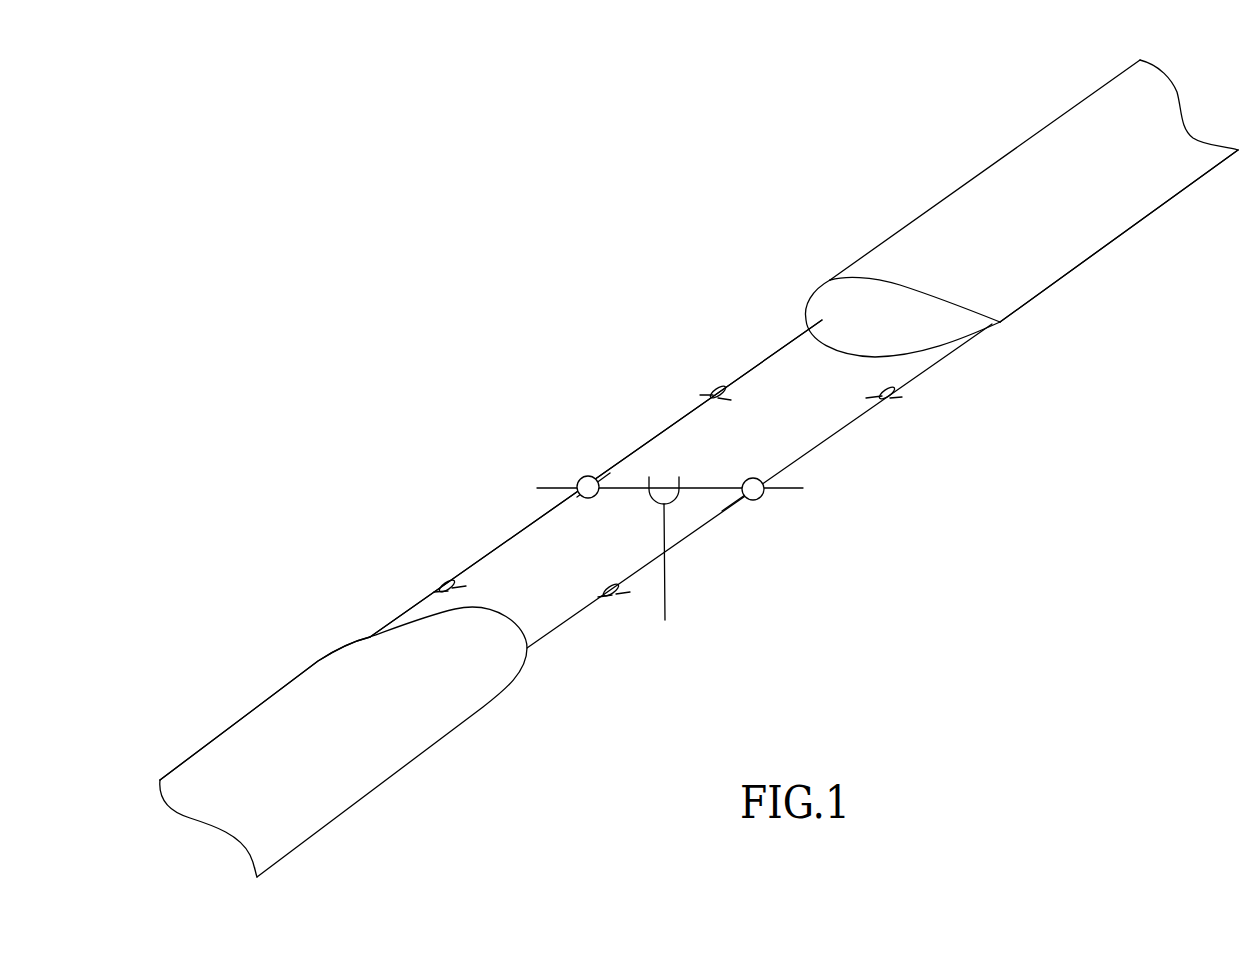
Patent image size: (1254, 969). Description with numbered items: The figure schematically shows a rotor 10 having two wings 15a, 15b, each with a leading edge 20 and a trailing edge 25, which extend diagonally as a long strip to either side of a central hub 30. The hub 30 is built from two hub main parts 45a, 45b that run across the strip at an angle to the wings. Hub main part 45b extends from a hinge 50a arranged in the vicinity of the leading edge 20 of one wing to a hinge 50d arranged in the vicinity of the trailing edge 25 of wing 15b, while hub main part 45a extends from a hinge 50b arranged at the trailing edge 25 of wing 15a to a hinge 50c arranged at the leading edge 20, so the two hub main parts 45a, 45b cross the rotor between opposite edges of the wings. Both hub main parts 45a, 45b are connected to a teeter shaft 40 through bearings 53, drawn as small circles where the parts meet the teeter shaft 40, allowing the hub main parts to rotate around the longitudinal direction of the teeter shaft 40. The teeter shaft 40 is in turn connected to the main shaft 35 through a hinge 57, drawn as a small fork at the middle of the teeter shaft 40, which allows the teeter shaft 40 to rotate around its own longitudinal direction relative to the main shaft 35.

The rotor 10 is at (592, 335).
The wing 15a is at (1008, 187).
The wing 15b is at (370, 752).
The leading edge 20 is at (905, 227).
The trailing edge 25 is at (1057, 283).
The hub 30 is at (722, 508).
The main shaft 35 is at (704, 568).
The teeter shaft 40 is at (722, 488).
The hub main part 45a is at (722, 511).
The hub main part 45b is at (613, 472).
The hinge 50a is at (719, 390).
The hinge 50b is at (891, 401).
The hinge 50c is at (613, 594).
The hinge 50d is at (445, 584).
The bearings 53 is at (759, 477).
The hinge 57 is at (667, 478).